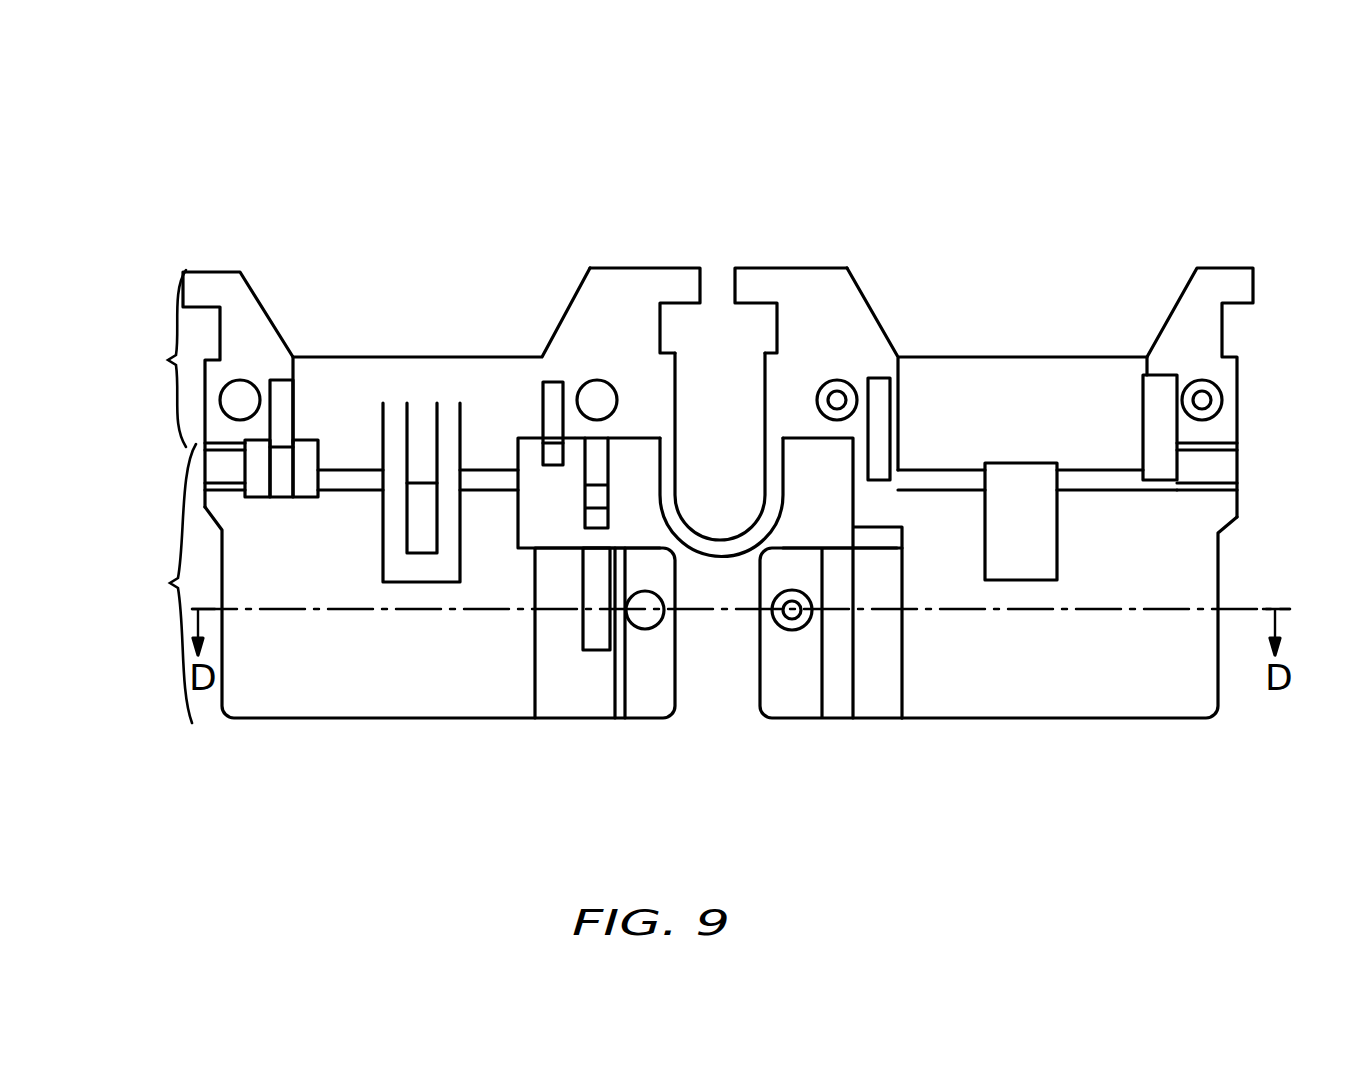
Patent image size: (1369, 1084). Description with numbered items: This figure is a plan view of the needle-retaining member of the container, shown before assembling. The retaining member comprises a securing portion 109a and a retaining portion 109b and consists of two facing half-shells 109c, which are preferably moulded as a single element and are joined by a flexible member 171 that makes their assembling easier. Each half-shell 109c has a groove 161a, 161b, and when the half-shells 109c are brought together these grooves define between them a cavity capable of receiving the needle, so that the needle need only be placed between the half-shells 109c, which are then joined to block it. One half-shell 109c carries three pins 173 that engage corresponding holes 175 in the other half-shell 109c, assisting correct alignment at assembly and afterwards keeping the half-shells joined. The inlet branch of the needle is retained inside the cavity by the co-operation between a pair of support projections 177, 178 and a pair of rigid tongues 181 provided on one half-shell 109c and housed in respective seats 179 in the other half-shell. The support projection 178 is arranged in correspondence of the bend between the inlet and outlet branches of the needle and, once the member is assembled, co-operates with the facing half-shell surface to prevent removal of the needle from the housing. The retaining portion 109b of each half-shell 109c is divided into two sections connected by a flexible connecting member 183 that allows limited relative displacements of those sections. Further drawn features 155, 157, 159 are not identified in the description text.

The securing portion 109a is at (128, 358).
The retaining portion 109b is at (135, 583).
The half-shells 109c is at (402, 692).
The mounting plate 155 is at (350, 377).
The end block 157 is at (185, 270).
The upper projection 159 is at (683, 282).
The groove 161a is at (230, 470).
The groove 161b is at (1215, 472).
The flexible member 171 is at (712, 540).
The pins 173 is at (838, 393).
The holes 175 is at (240, 393).
The support projection 177 is at (422, 510).
The support projection 178 is at (597, 497).
The seats 179 is at (880, 390).
The rigid tongues 181 is at (283, 393).
The flexible connecting member 183 is at (560, 703).